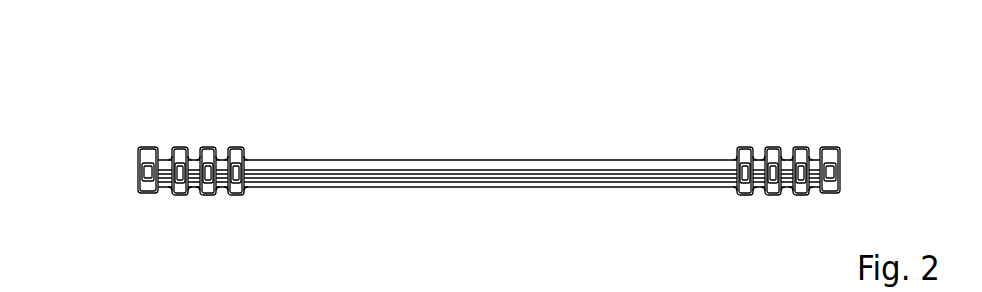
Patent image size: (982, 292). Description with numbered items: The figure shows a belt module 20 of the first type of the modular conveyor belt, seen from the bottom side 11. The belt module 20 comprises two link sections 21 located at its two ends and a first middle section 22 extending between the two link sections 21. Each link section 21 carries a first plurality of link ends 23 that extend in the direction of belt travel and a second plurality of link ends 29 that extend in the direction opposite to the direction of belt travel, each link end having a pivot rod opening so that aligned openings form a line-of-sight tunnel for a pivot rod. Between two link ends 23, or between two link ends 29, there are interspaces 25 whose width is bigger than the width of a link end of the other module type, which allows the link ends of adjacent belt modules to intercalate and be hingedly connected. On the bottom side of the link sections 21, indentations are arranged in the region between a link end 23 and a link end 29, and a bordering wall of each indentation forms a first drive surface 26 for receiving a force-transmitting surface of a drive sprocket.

The belt module 20 is at (432, 144).
The bottom side 11 is at (154, 144).
The link section 21 is at (494, 145).
The first middle section 22 is at (480, 127).
The link end 23 is at (236, 164).
The interspace 25 is at (165, 190).
The first drive surface 26 is at (237, 165).
The link end 29 is at (208, 187).